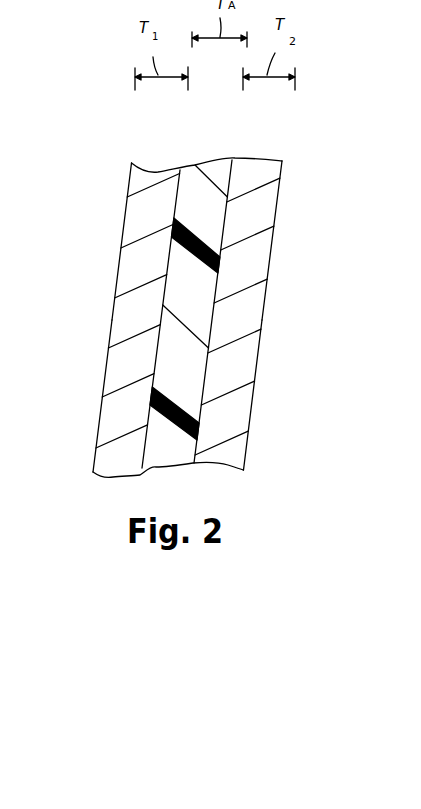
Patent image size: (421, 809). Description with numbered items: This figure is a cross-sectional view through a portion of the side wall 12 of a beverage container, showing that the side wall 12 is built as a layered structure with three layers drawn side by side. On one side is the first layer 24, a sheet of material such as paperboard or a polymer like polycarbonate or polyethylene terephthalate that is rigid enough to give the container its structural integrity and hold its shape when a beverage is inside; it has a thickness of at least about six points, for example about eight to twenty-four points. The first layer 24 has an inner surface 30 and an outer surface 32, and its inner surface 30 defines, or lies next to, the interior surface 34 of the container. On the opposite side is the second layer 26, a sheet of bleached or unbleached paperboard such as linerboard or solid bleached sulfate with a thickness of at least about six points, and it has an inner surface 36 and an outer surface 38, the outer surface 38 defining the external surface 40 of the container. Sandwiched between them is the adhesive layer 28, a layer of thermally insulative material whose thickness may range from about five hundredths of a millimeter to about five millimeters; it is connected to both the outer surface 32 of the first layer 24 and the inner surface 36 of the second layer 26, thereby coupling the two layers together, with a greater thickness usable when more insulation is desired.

The side wall 12 is at (282, 161).
The first layer 24 is at (130, 318).
The second layer 26 is at (250, 314).
The adhesive layer 28 is at (183, 377).
The inner surface 30 is at (125, 226).
The outer surface 32 is at (182, 187).
The interior surface 34 is at (102, 375).
The inner surface 36 is at (230, 168).
The outer surface 38 is at (276, 218).
The external surface 40 is at (252, 418).